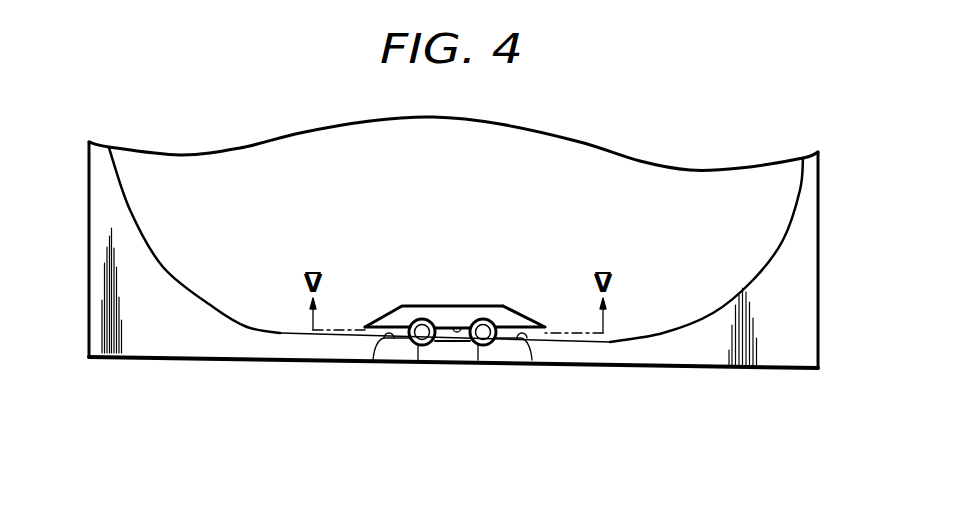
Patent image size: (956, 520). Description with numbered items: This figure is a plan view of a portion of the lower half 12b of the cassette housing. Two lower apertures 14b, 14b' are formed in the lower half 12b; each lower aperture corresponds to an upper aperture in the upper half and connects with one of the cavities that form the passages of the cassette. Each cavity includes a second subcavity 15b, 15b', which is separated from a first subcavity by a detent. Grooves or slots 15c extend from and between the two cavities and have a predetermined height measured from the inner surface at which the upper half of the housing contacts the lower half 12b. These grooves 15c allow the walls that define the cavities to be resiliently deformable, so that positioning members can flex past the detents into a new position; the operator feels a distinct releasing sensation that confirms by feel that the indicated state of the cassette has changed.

The lower half of the housing 12b is at (670, 369).
The lower aperture 14b is at (404, 383).
The lower aperture 14b' is at (488, 383).
The second subcavity 15b is at (434, 287).
The second subcavity 15b' is at (511, 287).
The grooves or slots 15c is at (457, 325).